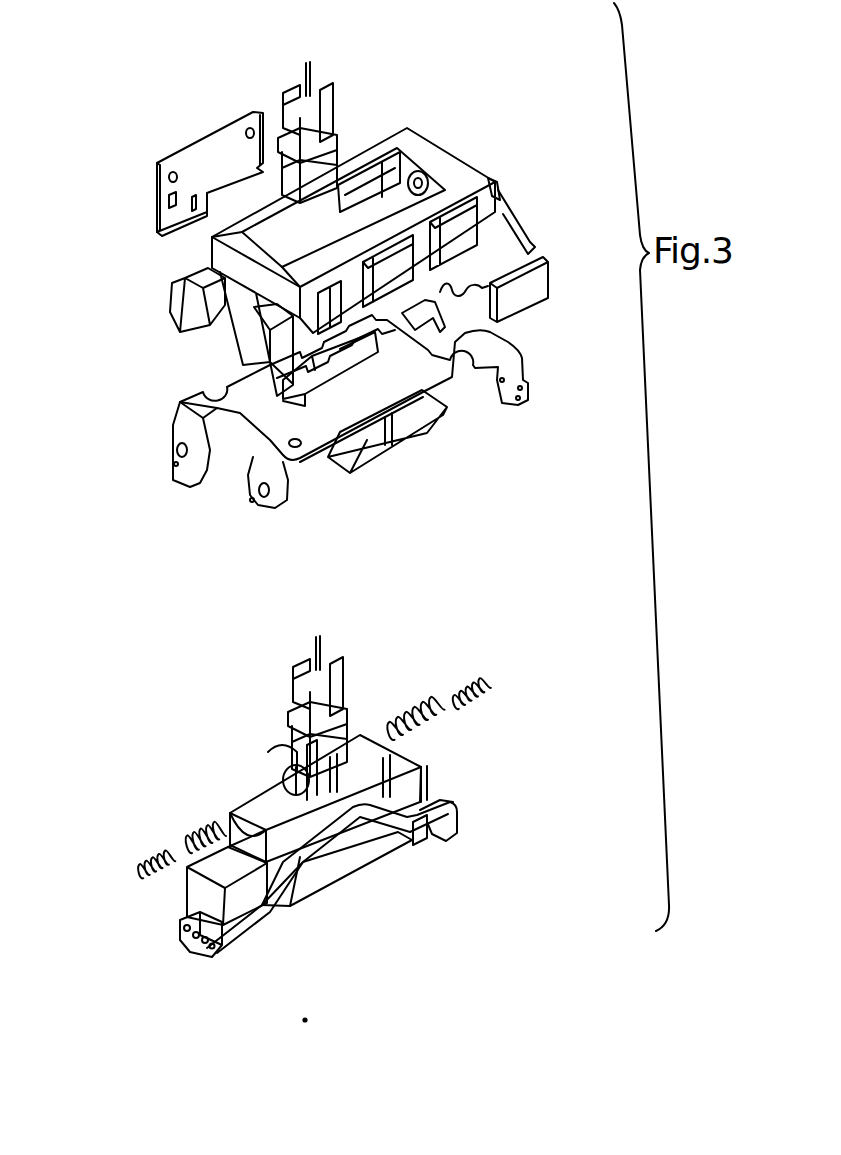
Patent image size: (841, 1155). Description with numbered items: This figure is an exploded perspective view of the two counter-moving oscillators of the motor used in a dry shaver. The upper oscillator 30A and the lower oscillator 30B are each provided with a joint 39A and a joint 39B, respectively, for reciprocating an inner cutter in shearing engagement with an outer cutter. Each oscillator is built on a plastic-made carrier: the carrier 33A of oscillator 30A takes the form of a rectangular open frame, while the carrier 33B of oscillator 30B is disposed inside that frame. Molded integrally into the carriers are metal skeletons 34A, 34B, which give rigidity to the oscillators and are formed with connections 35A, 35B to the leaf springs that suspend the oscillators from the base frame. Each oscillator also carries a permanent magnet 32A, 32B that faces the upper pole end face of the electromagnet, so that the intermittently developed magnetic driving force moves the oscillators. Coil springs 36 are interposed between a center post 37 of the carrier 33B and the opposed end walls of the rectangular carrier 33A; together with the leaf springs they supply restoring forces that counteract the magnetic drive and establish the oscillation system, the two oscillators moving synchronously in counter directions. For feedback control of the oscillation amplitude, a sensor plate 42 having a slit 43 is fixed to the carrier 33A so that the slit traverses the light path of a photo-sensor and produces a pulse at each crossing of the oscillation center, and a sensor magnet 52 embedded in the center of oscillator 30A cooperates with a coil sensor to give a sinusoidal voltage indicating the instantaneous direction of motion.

The sensor plate 42 is at (225, 140).
The slit 43 is at (160, 236).
The joint 39A is at (332, 95).
The carrier 33A is at (406, 128).
The oscillator 30A is at (500, 190).
The sensor magnet 52 is at (522, 297).
The metal skeleton 34A is at (318, 434).
The connection 35A is at (183, 482).
The permanent magnet 32A is at (410, 442).
The joint 39B is at (332, 670).
The coil springs 36 is at (463, 687).
The center post 37 is at (287, 762).
The carrier 33B is at (405, 802).
The oscillator 30B is at (438, 776).
The metal skeleton 34B is at (262, 912).
The permanent magnet 32B is at (345, 867).
The connection 35B is at (193, 938).